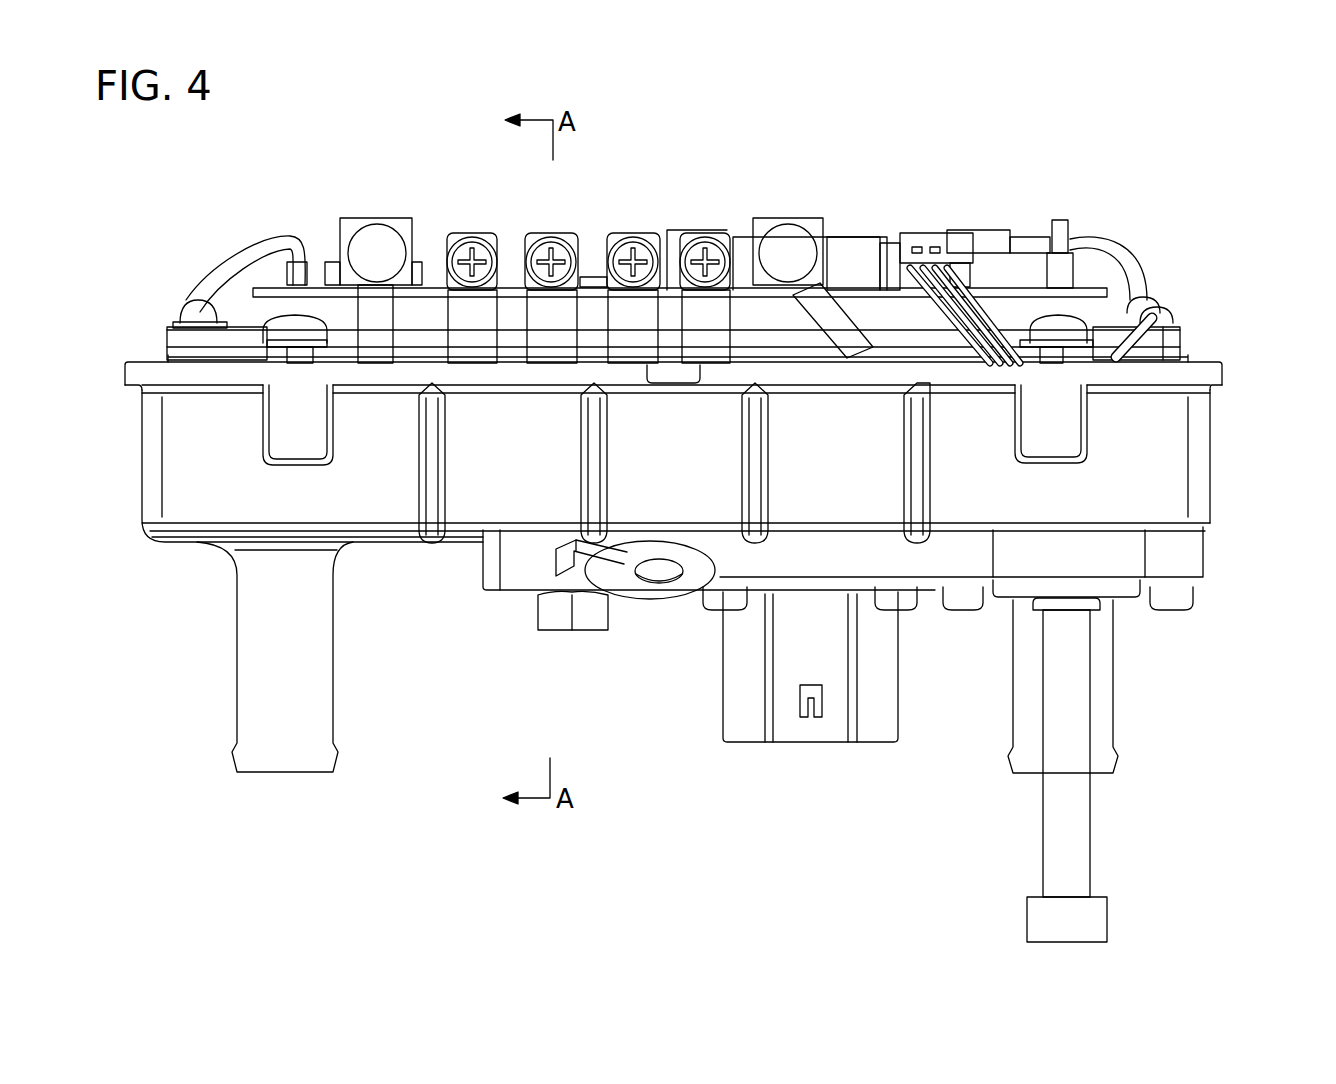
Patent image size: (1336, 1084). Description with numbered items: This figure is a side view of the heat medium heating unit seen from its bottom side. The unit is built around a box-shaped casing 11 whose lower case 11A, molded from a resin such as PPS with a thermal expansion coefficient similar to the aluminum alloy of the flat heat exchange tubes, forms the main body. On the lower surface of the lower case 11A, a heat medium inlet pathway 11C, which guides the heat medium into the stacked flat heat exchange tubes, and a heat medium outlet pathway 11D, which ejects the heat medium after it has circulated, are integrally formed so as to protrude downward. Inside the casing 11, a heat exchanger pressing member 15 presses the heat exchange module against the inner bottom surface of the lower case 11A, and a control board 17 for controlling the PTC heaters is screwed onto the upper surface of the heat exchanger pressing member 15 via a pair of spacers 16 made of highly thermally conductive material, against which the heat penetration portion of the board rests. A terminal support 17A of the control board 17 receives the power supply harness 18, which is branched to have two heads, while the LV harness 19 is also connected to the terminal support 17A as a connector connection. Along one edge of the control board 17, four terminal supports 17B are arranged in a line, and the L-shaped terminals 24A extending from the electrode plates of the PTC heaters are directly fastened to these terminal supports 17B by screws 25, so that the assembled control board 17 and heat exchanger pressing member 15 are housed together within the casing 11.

The casing 11 is at (193, 551).
The lower case 11A is at (1163, 483).
The heat medium inlet pathway 11C is at (320, 680).
The heat medium outlet pathway 11D is at (1103, 677).
The heat exchanger pressing member 15 is at (894, 342).
The spacer 16 is at (328, 312).
The control board 17 is at (856, 292).
The terminal support 17A is at (352, 225).
The terminal support 17B is at (488, 230).
The power supply harness 18 is at (375, 313).
The LV harness 19 is at (987, 305).
The terminal 24A is at (548, 348).
The screw 25 is at (640, 252).